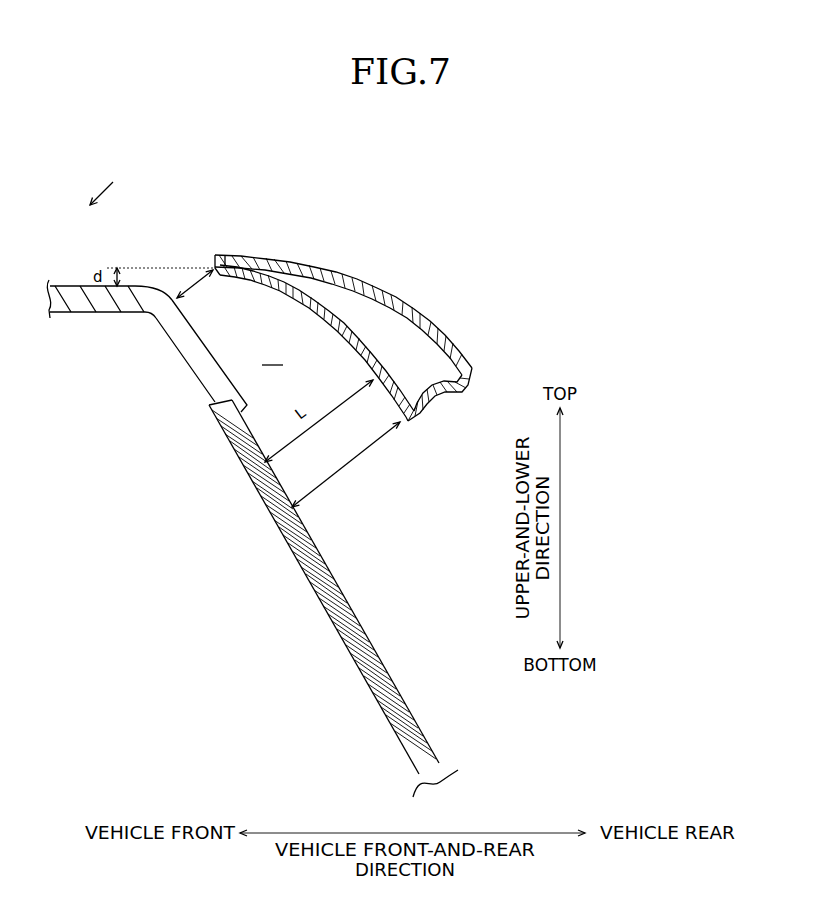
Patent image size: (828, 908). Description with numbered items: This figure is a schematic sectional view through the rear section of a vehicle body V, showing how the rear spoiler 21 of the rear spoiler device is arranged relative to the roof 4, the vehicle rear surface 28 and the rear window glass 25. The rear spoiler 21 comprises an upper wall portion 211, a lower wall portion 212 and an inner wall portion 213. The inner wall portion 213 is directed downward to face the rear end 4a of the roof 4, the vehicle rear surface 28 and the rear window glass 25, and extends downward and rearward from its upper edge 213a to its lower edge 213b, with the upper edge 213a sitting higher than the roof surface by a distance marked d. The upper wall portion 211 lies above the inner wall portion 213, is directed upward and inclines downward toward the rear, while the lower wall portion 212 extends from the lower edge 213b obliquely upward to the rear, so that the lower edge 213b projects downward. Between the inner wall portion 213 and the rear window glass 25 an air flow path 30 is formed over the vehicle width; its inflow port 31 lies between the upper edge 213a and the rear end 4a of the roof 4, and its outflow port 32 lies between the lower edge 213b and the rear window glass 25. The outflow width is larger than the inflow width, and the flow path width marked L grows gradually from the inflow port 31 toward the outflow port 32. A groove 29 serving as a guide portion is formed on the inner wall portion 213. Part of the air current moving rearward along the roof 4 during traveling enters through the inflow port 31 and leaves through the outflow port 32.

The vehicle body V is at (108, 191).
The roof 4 is at (71, 285).
The rear end of the roof 4a is at (183, 300).
The rear spoiler 21 is at (338, 330).
The upper wall portion 211 is at (362, 284).
The lower wall portion 212 is at (438, 398).
The inner wall portion 213 is at (311, 337).
The upper edge of the inner wall portion 213a is at (213, 252).
The lower edge of the inner wall portion 213b is at (411, 423).
The rear window glass 25 is at (301, 524).
The vehicle rear surface 28 is at (208, 335).
The groove 29 is at (336, 330).
The air flow path 30 is at (272, 356).
The inflow port 31 is at (200, 283).
The outflow port 32 is at (345, 467).